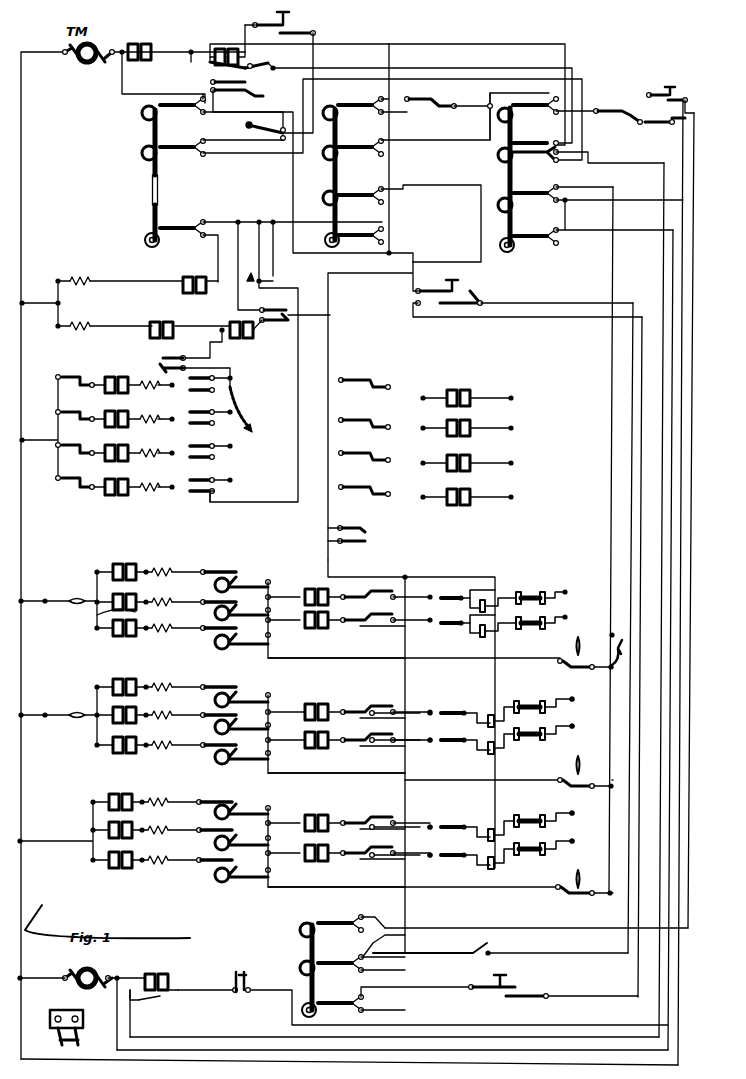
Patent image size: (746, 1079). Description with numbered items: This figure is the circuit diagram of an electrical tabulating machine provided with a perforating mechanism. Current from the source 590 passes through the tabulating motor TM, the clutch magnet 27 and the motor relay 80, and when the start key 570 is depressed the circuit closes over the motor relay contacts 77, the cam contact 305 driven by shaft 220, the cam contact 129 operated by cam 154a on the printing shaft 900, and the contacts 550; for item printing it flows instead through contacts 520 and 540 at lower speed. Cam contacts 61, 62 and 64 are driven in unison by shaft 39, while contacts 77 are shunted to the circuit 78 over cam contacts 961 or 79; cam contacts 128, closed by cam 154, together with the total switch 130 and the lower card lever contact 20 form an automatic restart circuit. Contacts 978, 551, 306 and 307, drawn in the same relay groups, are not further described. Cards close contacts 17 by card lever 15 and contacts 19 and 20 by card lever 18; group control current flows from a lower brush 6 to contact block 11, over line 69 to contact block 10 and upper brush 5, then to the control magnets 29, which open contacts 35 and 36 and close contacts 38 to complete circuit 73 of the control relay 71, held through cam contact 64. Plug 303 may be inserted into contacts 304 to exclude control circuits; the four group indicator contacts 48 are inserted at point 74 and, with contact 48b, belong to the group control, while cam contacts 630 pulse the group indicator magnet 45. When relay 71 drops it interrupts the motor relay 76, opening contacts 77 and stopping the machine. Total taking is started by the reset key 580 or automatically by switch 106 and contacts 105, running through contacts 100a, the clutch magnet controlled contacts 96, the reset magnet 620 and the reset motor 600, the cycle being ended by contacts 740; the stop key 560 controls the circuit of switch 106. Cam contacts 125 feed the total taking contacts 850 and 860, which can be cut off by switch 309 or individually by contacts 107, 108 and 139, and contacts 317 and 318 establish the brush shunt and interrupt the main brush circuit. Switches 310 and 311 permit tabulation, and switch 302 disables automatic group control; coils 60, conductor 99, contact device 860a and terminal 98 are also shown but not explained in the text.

The clutch magnet 27 is at (141, 67).
The start key 570 is at (300, 32).
The motor relay 80 is at (222, 50).
The total switch 130 is at (262, 62).
The lower card lever contact 20 is at (250, 89).
The motor relay controlled contacts 77 is at (244, 126).
The shaft 39 is at (152, 193).
The cam contact 61 is at (173, 114).
The cam contact 62 is at (173, 155).
The cam contact 64 is at (175, 237).
The shaft 220 is at (333, 182).
The circuit 78 is at (380, 94).
The cam contacts 79 is at (343, 122).
The cam contacts 961 is at (353, 159).
The cam contact 305 is at (353, 205).
The relay coil 978 is at (354, 243).
The contact 551 is at (431, 113).
The shaft of the printing mechanism 900 is at (508, 220).
The cam contact 129 is at (535, 100).
The cam 154a is at (527, 120).
The cam contacts 128 is at (510, 143).
The cam 154 is at (500, 160).
The contact 306 is at (535, 165).
The conductor 307 is at (610, 167).
The cam contacts 125 is at (528, 203).
The contacts 740 is at (529, 243).
The contacts 550 is at (660, 90).
The contacts 520 is at (619, 126).
The contacts 540 is at (660, 125).
The stop key 560 is at (445, 280).
The group indicator magnet 45 is at (193, 297).
The motor relay 76 is at (163, 324).
The switch 302 is at (262, 278).
The contact 48b is at (310, 315).
The control relay 71 is at (253, 333).
The current circuit 73 is at (230, 350).
The contacts 17 is at (160, 358).
The card lever 15 is at (158, 370).
The plug 303 is at (250, 430).
The contacts 36 is at (58, 450).
The contacts 35 is at (88, 466).
The control magnets 29 is at (116, 436).
The contacts 38 is at (200, 424).
The contacts 304 is at (238, 466).
The group indicator contacts 48 is at (378, 455).
The coils 60 is at (455, 455).
The contacts 19 is at (366, 535).
The card lever 18 is at (362, 548).
The switch 310 is at (72, 597).
The conductor 99 is at (97, 610).
The relay 860a is at (240, 590).
The total taking contacts 860 is at (214, 612).
The total taking contacts 850 is at (245, 645).
The contacts 317 is at (360, 602).
The contacts 318 is at (372, 630).
The terminal 98 is at (425, 595).
The point 74 is at (422, 622).
The contact block 11 is at (478, 592).
The lower brushes 6 is at (483, 640).
The upper brush 5 is at (520, 632).
The contact block 10 is at (528, 588).
The contact 139 is at (570, 672).
The switch 309 is at (612, 675).
The switch 311 is at (72, 711).
The line 69 is at (472, 710).
The contact 107 is at (570, 792).
The contact 108 is at (572, 900).
The reset motor 600 is at (100, 968).
The reset magnet 620 is at (152, 992).
The current source 590 is at (70, 1000).
The clutch magnet controlled contacts 96 is at (228, 978).
The cam controlled contacts 630 is at (300, 922).
The contacts 105 is at (365, 975).
The cam contacts 100a is at (332, 1014).
The switch 106 is at (470, 948).
The reset key 580 is at (500, 1000).